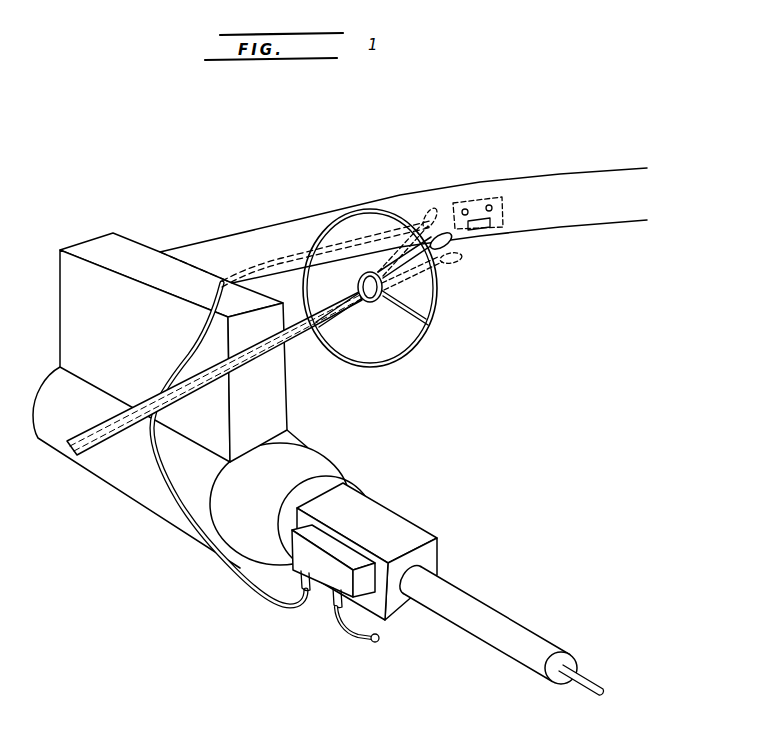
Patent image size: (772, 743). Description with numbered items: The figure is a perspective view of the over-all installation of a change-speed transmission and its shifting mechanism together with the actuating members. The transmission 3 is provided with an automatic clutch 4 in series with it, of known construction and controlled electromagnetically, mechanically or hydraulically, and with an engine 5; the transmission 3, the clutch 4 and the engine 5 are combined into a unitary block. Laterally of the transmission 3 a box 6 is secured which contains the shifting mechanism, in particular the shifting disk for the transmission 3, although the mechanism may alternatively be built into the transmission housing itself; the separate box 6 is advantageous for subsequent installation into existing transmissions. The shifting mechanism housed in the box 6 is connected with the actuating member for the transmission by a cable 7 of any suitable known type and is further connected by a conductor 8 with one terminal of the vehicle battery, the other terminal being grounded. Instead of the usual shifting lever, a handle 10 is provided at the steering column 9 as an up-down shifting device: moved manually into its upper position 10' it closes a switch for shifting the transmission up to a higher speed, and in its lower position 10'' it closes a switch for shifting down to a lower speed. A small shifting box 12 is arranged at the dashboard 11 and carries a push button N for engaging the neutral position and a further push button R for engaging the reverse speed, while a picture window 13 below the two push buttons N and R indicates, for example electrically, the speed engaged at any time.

The transmission 3 is at (380, 520).
The automatic clutch 4 is at (318, 460).
The engine 5 is at (67, 302).
The box 6 is at (330, 568).
The cable 7 is at (158, 473).
The conductor 8 is at (349, 629).
The steering column 9 is at (296, 337).
The handle 10 is at (440, 254).
The upper position of the handle 10' is at (409, 215).
The lower position of the handle 10'' is at (428, 278).
The dashboard 11 is at (580, 218).
The shifting box 12 is at (503, 200).
The picture window 13 is at (490, 222).
The push button N is at (465, 209).
The push button R is at (490, 205).